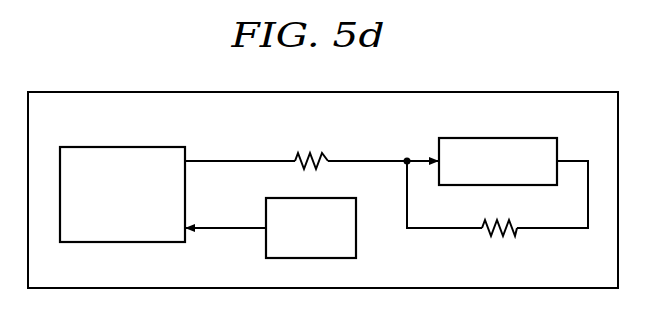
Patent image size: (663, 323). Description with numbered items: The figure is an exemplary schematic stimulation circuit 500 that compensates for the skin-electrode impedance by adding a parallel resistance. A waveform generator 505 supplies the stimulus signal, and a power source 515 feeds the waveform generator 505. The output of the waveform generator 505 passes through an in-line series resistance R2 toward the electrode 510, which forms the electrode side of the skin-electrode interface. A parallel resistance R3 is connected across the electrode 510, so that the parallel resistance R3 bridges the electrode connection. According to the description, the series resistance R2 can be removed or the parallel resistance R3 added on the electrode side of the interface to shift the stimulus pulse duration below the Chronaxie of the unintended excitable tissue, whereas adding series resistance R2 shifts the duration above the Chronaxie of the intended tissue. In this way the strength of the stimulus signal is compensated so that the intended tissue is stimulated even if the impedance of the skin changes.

The electrode system 500 is at (565, 92).
The waveform generator 505 is at (125, 147).
The electrode 510 is at (497, 138).
The power source 515 is at (357, 239).
The in-line series resistance R2 is at (311, 149).
The parallel resistance R3 is at (497, 198).